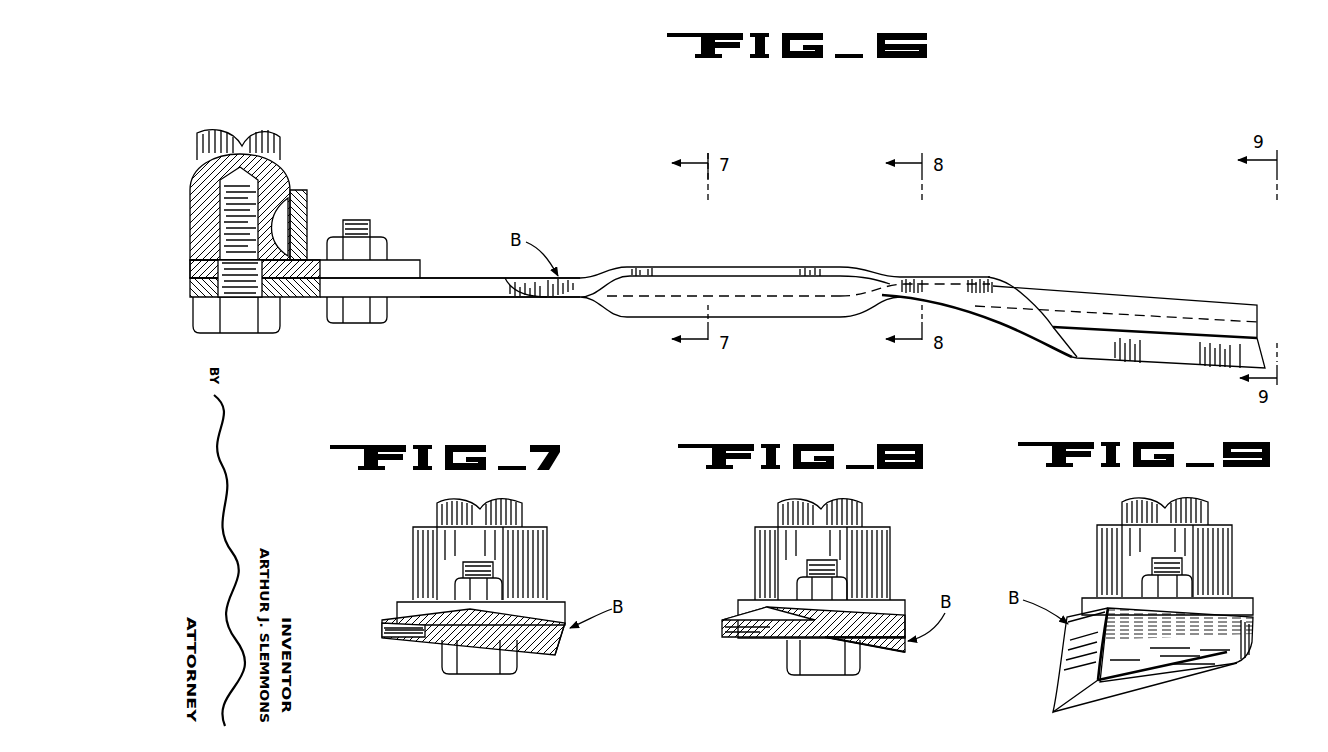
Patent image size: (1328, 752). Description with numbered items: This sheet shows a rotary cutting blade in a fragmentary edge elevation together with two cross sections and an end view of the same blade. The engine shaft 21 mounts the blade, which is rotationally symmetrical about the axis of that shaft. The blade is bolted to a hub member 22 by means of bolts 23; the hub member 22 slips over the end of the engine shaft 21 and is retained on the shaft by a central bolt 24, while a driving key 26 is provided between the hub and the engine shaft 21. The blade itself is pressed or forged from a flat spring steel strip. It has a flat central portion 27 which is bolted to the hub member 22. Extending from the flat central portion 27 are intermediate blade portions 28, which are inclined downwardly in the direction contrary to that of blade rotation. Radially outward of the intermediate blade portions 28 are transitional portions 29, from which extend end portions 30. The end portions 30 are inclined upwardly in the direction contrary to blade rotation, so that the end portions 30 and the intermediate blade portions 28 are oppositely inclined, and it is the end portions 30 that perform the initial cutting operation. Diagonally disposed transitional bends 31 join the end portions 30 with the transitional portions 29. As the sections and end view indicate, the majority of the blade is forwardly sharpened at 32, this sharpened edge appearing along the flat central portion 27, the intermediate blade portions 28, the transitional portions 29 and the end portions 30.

In FIG. 6, the engine shaft 21 is at (258, 133).
In FIG. 7, the engine shaft 21 is at (492, 500).
In FIG. 8, the engine shaft 21 is at (832, 500).
In FIG. 9, the engine shaft 21 is at (1180, 497).
In FIG. 6, the hub member 22 is at (303, 200).
In FIG. 7, the hub member 22 is at (522, 553).
In FIG. 8, the hub member 22 is at (873, 546).
In FIG. 9, the hub member 22 is at (1213, 552).
In FIG. 6, the bolts 23 is at (370, 225).
In FIG. 7, the bolts 23 is at (460, 652).
In FIG. 8, the bolts 23 is at (816, 565).
In FIG. 9, the bolts 23 is at (1161, 562).
In FIG. 6, the central bolt 24 is at (240, 320).
In FIG. 7, the central bolt 24 is at (460, 667).
In FIG. 8, the central bolt 24 is at (792, 661).
In FIG. 6, the driving key 26 is at (283, 214).
In FIG. 6, the flat central portion 27 is at (470, 286).
In FIG. 7, the flat central portion 27 is at (540, 622).
In FIG. 6, the intermediate blade portions 28 is at (748, 292).
In FIG. 7, the intermediate blade portions 28 is at (553, 645).
In FIG. 8, the intermediate blade portions 28 is at (882, 645).
In FIG. 9, the intermediate blade portions 28 is at (1202, 606).
In FIG. 6, the transitional portions 29 is at (930, 289).
In FIG. 8, the transitional portions 29 is at (880, 625).
In FIG. 6, the end portions 30 is at (1173, 303).
In FIG. 9, the end portions 30 is at (1133, 642).
In FIG. 6, the transitional bends 31 is at (1030, 302).
In FIG. 6, the forwardly sharpened edge 32 is at (538, 290).
In FIG. 7, the forwardly sharpened edge 32 is at (405, 615).
In FIG. 8, the forwardly sharpened edge 32 is at (735, 621).
In FIG. 9, the forwardly sharpened edge 32 is at (1075, 674).